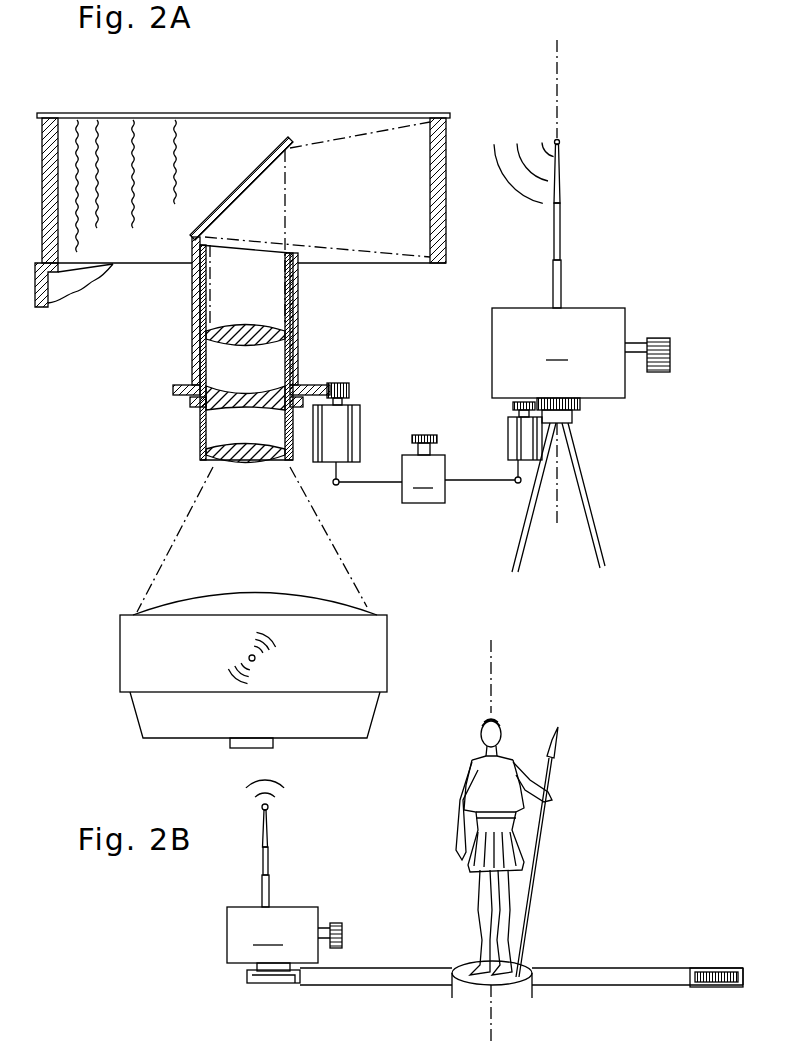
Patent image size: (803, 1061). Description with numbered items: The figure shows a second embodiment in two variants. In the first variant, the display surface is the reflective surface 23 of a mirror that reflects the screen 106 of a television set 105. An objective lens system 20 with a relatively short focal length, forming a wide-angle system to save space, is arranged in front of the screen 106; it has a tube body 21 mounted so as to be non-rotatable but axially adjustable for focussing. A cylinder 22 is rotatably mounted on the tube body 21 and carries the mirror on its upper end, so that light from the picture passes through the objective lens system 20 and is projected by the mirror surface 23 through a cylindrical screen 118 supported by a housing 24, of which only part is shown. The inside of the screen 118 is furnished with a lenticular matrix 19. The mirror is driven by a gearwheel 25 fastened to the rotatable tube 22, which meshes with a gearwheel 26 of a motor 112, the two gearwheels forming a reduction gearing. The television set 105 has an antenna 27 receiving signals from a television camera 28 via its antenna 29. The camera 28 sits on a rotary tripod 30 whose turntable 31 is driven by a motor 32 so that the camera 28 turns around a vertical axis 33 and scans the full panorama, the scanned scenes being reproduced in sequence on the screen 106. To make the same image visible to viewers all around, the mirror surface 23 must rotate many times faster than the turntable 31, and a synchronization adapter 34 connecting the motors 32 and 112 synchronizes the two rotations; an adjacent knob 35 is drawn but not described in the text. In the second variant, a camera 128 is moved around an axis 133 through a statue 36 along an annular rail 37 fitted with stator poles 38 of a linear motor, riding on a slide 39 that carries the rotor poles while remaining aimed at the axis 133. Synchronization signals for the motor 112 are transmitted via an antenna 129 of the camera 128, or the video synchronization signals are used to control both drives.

In FIG. 2A, the lenticular matrix 19 is at (57, 155).
In FIG. 2A, the screen 118 is at (447, 138).
In FIG. 2A, the reflective surface 23 is at (242, 197).
In FIG. 2A, the housing 24 is at (68, 277).
In FIG. 2A, the cylinder 22 is at (298, 322).
In FIG. 2A, the gearwheel 25 is at (193, 386).
In FIG. 2A, the objective lens system 20 is at (215, 367).
In FIG. 2A, the tube body 21 is at (203, 451).
In FIG. 2A, the gearwheel 26 is at (341, 381).
In FIG. 2A, the motor 112 is at (358, 418).
In FIG. 2A, the synchronization adapter 34 is at (427, 479).
In FIG. 2A, the control knob 35 is at (417, 433).
In FIG. 2A, the motor 32 is at (508, 436).
In FIG. 2A, the television camera 28 is at (581, 353).
In FIG. 2A, the antenna 29 is at (565, 275).
In FIG. 2A, the rotary tripod 30 is at (581, 485).
In FIG. 2A, the turntable 31 is at (581, 405).
In FIG. 2A, the vertical axis 33 is at (557, 510).
In FIG. 2A, the television set 105 is at (372, 664).
In FIG. 2A, the screen 106 is at (283, 594).
In FIG. 2A, the antenna 27 is at (248, 659).
In FIG. 2B, the axis 133 is at (493, 691).
In FIG. 2B, the antenna 129 is at (270, 858).
In FIG. 2B, the camera 128 is at (284, 935).
In FIG. 2B, the slide 39 is at (271, 977).
In FIG. 2B, the annular rail 37 is at (620, 968).
In FIG. 2B, the stator poles 38 is at (705, 970).
In FIG. 2B, the statue 36 is at (473, 885).